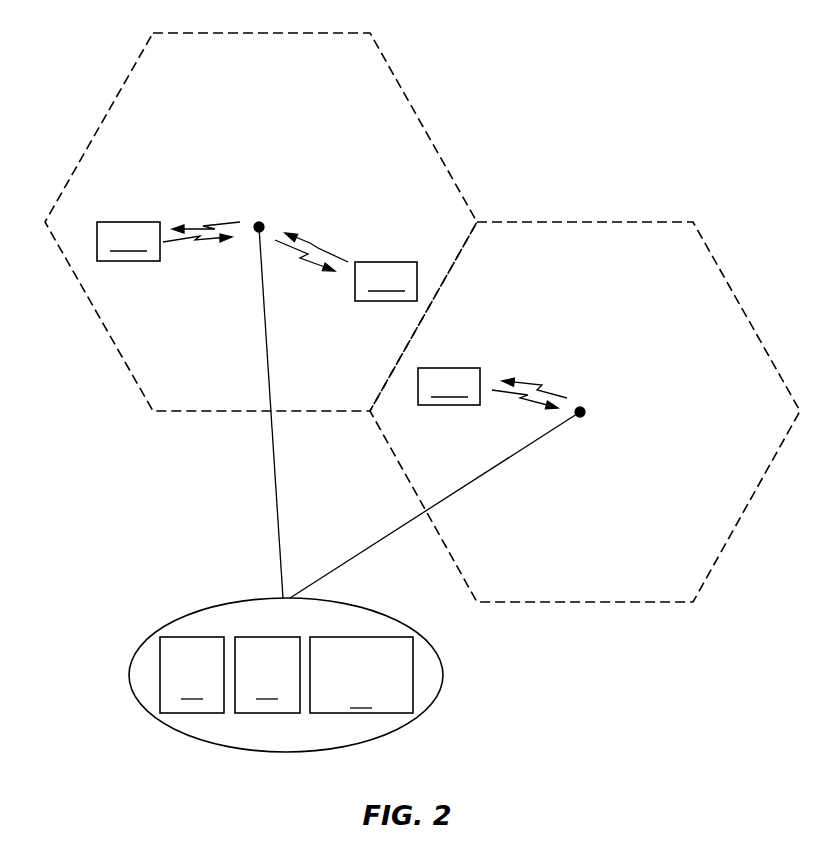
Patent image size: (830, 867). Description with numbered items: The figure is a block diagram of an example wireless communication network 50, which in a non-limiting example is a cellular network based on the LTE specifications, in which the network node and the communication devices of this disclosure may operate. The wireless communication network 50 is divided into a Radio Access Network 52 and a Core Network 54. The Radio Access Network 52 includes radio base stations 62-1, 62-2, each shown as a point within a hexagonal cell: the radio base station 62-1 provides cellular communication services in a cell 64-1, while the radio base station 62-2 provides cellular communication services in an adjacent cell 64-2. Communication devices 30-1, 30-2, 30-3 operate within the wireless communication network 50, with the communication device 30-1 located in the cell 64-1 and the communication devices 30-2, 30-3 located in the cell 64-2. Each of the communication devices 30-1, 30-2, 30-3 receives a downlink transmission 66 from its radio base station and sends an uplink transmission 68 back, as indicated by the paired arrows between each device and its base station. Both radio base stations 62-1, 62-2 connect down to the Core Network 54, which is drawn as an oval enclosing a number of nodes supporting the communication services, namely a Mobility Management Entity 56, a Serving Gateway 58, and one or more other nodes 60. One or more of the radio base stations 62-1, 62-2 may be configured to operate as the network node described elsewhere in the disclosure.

The wireless communication network 50 is at (616, 119).
The Radio Access Network 52 is at (196, 448).
The Core Network 54 is at (208, 607).
The Mobility Management Entity 56 is at (192, 675).
The Serving Gateway 58 is at (267, 675).
The other nodes 60 is at (361, 675).
The radio base station 62-1 is at (583, 407).
The radio base station 62-2 is at (263, 221).
The cell 64-1 is at (622, 222).
The cell 64-2 is at (415, 117).
The communication device 30-1 is at (449, 386).
The communication device 30-2 is at (386, 281).
The communication device 30-3 is at (128, 241).
The downlink transmission 66 is at (203, 223).
The uplink transmission 68 is at (203, 243).